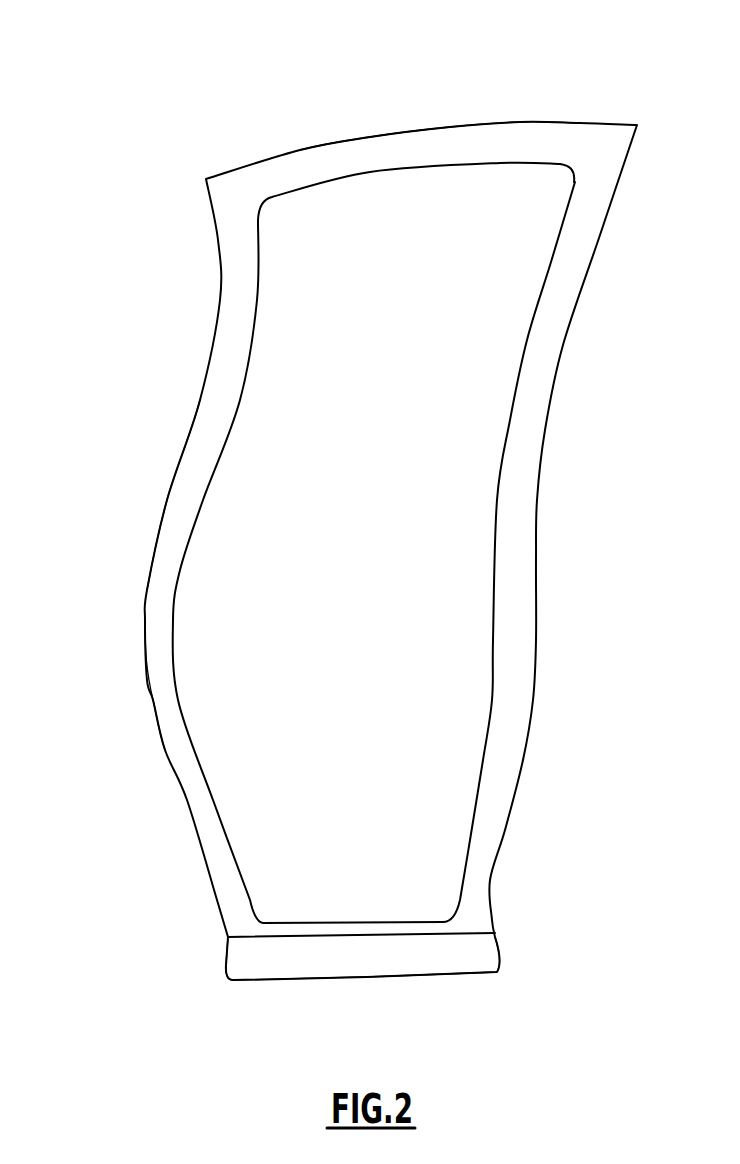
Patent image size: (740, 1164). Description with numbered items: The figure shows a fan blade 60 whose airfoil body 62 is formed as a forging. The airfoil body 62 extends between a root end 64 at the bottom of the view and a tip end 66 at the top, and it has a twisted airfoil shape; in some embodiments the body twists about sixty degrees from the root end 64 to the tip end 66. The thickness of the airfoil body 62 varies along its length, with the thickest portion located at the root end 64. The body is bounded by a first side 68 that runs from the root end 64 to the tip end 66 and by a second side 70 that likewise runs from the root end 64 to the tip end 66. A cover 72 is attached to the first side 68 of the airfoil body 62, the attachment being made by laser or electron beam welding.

The fan blade 60 is at (344, 501).
The airfoil body 62 is at (145, 405).
The root end 64 is at (243, 958).
The tip end 66 is at (461, 139).
The first side 68 is at (157, 594).
The second side 70 is at (147, 680).
The cover 72 is at (477, 320).